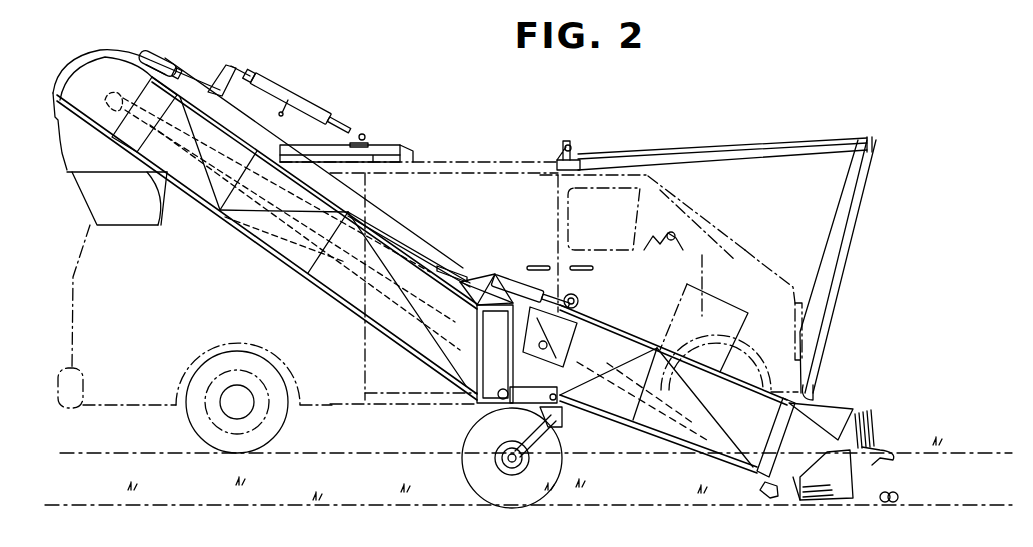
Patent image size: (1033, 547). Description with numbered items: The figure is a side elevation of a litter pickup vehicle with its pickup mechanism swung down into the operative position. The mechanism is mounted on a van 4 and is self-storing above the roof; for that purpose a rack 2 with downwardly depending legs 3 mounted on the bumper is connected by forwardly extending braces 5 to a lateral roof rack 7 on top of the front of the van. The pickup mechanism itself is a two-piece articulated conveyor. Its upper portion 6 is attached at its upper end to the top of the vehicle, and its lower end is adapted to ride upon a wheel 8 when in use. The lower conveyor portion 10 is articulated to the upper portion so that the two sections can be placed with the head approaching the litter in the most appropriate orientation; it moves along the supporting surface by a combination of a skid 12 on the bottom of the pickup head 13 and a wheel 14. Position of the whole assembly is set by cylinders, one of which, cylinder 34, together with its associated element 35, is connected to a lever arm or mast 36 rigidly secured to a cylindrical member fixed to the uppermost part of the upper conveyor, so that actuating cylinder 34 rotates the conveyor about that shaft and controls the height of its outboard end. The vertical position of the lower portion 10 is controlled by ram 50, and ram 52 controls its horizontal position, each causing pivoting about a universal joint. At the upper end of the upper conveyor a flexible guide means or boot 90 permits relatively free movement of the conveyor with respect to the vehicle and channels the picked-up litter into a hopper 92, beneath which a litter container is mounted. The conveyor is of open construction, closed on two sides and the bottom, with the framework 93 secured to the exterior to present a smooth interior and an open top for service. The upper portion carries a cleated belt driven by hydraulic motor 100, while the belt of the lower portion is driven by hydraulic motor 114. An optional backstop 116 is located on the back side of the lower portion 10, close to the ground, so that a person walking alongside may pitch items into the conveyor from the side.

The rack 2 is at (868, 135).
The legs 3 is at (848, 253).
The van 4 is at (459, 224).
The braces 5 is at (718, 147).
The upper portion of conveyor 6 is at (262, 250).
The lateral roof rack 7 is at (578, 148).
The wheel 8 is at (527, 492).
The lower conveyor portion 10 is at (668, 438).
The skid 12 is at (838, 498).
The pickup head 13 is at (883, 440).
The wheel 14 is at (772, 490).
The cylinder 34 is at (340, 124).
The piston rod 35 is at (300, 97).
The lever arm or mast 36 is at (229, 103).
The ram 50 is at (512, 276).
The ram 52 is at (523, 363).
The flexible guide means or boot 90 is at (106, 159).
The hopper 92 is at (132, 210).
The framework 93 is at (216, 174).
The hydraulic motor 100 is at (165, 55).
The hydraulic motor 114 is at (579, 300).
The backstop 116 is at (738, 308).